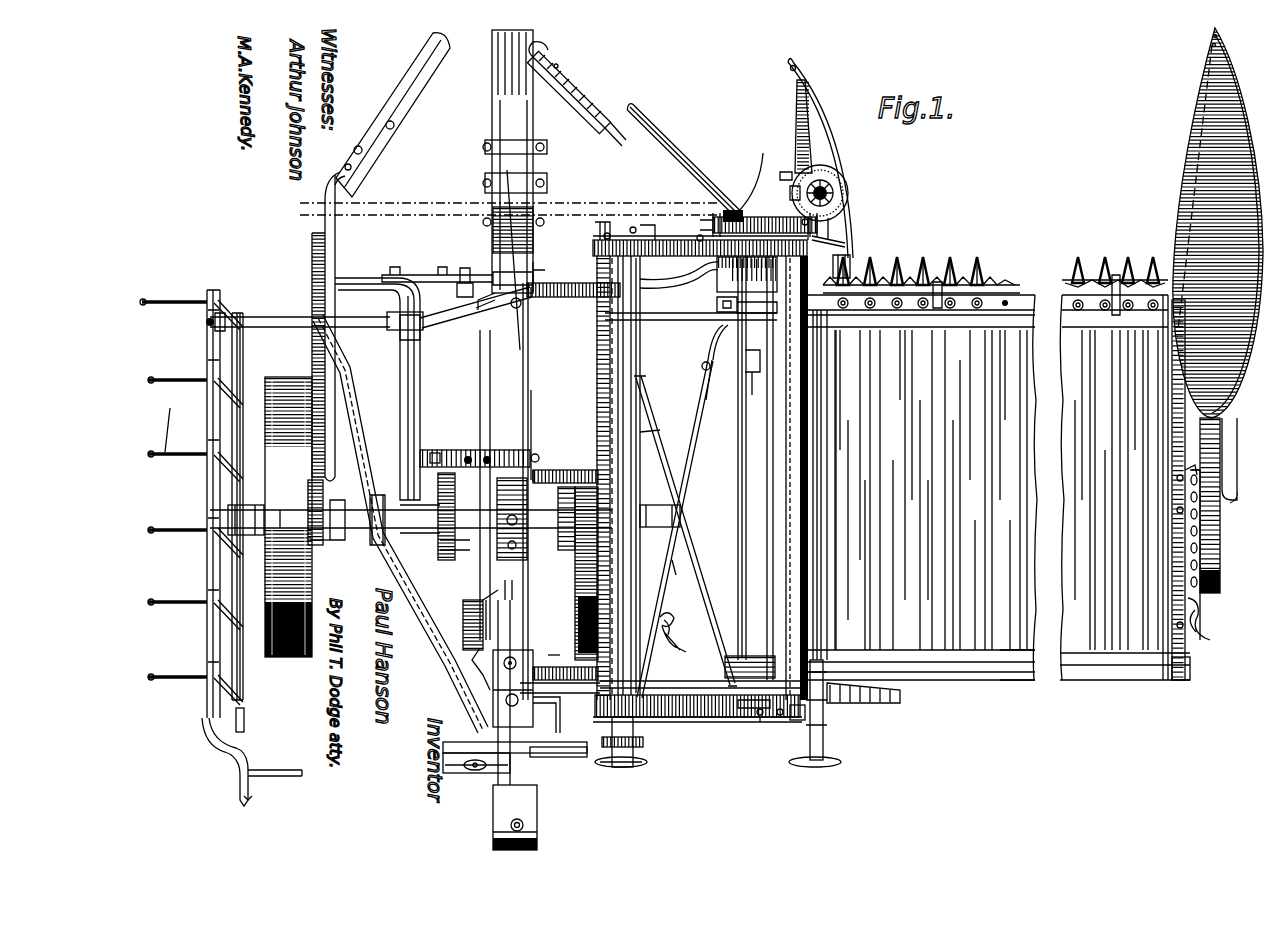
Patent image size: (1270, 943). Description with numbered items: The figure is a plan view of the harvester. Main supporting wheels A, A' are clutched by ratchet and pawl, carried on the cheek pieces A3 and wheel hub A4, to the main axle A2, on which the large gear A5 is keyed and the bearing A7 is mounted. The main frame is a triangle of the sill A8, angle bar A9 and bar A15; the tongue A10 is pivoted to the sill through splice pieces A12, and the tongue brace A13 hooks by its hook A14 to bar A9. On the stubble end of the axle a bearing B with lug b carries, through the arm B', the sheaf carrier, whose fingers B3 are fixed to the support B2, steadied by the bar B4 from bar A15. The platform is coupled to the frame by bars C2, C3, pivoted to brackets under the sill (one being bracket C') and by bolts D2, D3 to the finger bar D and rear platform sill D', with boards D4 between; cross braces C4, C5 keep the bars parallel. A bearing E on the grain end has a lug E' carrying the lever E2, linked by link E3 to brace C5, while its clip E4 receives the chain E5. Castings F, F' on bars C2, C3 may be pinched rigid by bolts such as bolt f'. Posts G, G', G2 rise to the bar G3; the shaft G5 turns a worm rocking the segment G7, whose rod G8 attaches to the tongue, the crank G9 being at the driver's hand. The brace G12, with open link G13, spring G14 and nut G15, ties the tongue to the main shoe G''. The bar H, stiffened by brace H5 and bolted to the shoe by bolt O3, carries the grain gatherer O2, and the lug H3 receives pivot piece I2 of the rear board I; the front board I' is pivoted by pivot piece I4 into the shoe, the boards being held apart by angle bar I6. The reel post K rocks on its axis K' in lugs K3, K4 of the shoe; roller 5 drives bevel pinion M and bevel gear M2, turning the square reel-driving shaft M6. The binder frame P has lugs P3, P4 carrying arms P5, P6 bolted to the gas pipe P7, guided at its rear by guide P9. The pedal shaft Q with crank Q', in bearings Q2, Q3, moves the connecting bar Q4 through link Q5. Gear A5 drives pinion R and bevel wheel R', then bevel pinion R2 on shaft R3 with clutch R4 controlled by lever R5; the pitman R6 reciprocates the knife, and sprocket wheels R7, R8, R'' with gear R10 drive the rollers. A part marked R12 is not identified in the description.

The main supporting wheel A is at (411, 517).
The main supporting wheel A' is at (560, 569).
The main axle A2 is at (484, 541).
The cheek pieces A3 is at (360, 535).
The wheel hub A4 is at (312, 560).
The large gear A5 is at (458, 560).
The bearing A7 is at (395, 510).
The sill A8 is at (510, 597).
The angle bar A9 is at (388, 560).
The tongue A10 is at (533, 118).
The splice pieces A12 is at (540, 168).
The tongue brace A13 is at (405, 128).
The hook A14 is at (510, 214).
The bar A15 is at (457, 318).
The bearing B is at (199, 504).
The arm B' is at (221, 516).
The support B2 is at (207, 334).
The fingers B3 is at (200, 385).
The bar B4 is at (272, 316).
The lug b is at (255, 508).
The bracket C' is at (530, 650).
The bar C2 is at (690, 322).
The bar C3 is at (684, 680).
The cross brace C4 is at (655, 418).
The cross brace C5 is at (701, 408).
The finger bar D is at (922, 466).
The rear platform sill D' is at (996, 674).
The bolt D2 is at (722, 325).
The bolt D3 is at (733, 656).
The boards D4 is at (748, 450).
The bearing E is at (685, 531).
The lug E' is at (669, 511).
The lever E2 is at (665, 590).
The link E3 is at (701, 366).
The clip E4 is at (675, 613).
The chain E5 is at (680, 630).
The casting F is at (752, 372).
The casting F' is at (745, 734).
The bolt f' is at (750, 755).
The post G is at (560, 655).
The post G' is at (544, 466).
The post G2 is at (570, 283).
The bar G3 is at (596, 356).
The shaft G5 is at (530, 404).
The segment G7 is at (532, 312).
The rod G8 is at (535, 265).
The crank G9 is at (558, 715).
The brace G12 is at (690, 170).
The open link G13 is at (588, 96).
The spring G14 is at (577, 57).
The nut G15 is at (552, 62).
The main shoe G'' is at (752, 175).
The bar H is at (798, 118).
The lug H3 is at (797, 722).
The brace H5 is at (850, 700).
The rearmost board I is at (700, 473).
The front board I' is at (695, 221).
The pivot piece I2 is at (783, 722).
The pivot piece I4 is at (770, 220).
The angle bar I6 is at (655, 432).
The reel post K is at (848, 257).
The axis K' is at (760, 181).
The lug K3 is at (722, 212).
The lug K4 is at (800, 212).
The bevel pinion M is at (845, 220).
The bevel gear M2 is at (790, 190).
The reel-driving shaft M6 is at (838, 180).
The grain gatherer O2 is at (830, 124).
The bolt O3 is at (848, 246).
The binder frame P is at (350, 372).
The lug P3 is at (428, 274).
The lug P4 is at (436, 450).
The arm P5 is at (466, 270).
The arm P6 is at (476, 450).
The gas pipe P7 is at (530, 384).
The guide P9 is at (540, 452).
The shaft Q is at (515, 772).
The crank Q' is at (558, 767).
The bearing Q2 is at (505, 790).
The bearing Q3 is at (250, 752).
The connecting bar Q4 is at (245, 672).
The link Q5 is at (246, 718).
The pinion R is at (477, 485).
The bevel wheel R' is at (446, 658).
The bevel pinion R2 is at (478, 655).
The shaft R3 is at (480, 368).
The clutch R4 is at (495, 660).
The lever R5 is at (520, 640).
The pitman R6 is at (680, 288).
The sprocket wheel R7 is at (463, 765).
The sprocket wheel R8 is at (632, 762).
The gear R10 is at (643, 742).
The hatched block R12 is at (462, 270).
The sprocket wheel R'' is at (815, 722).
The roller 5 is at (828, 398).